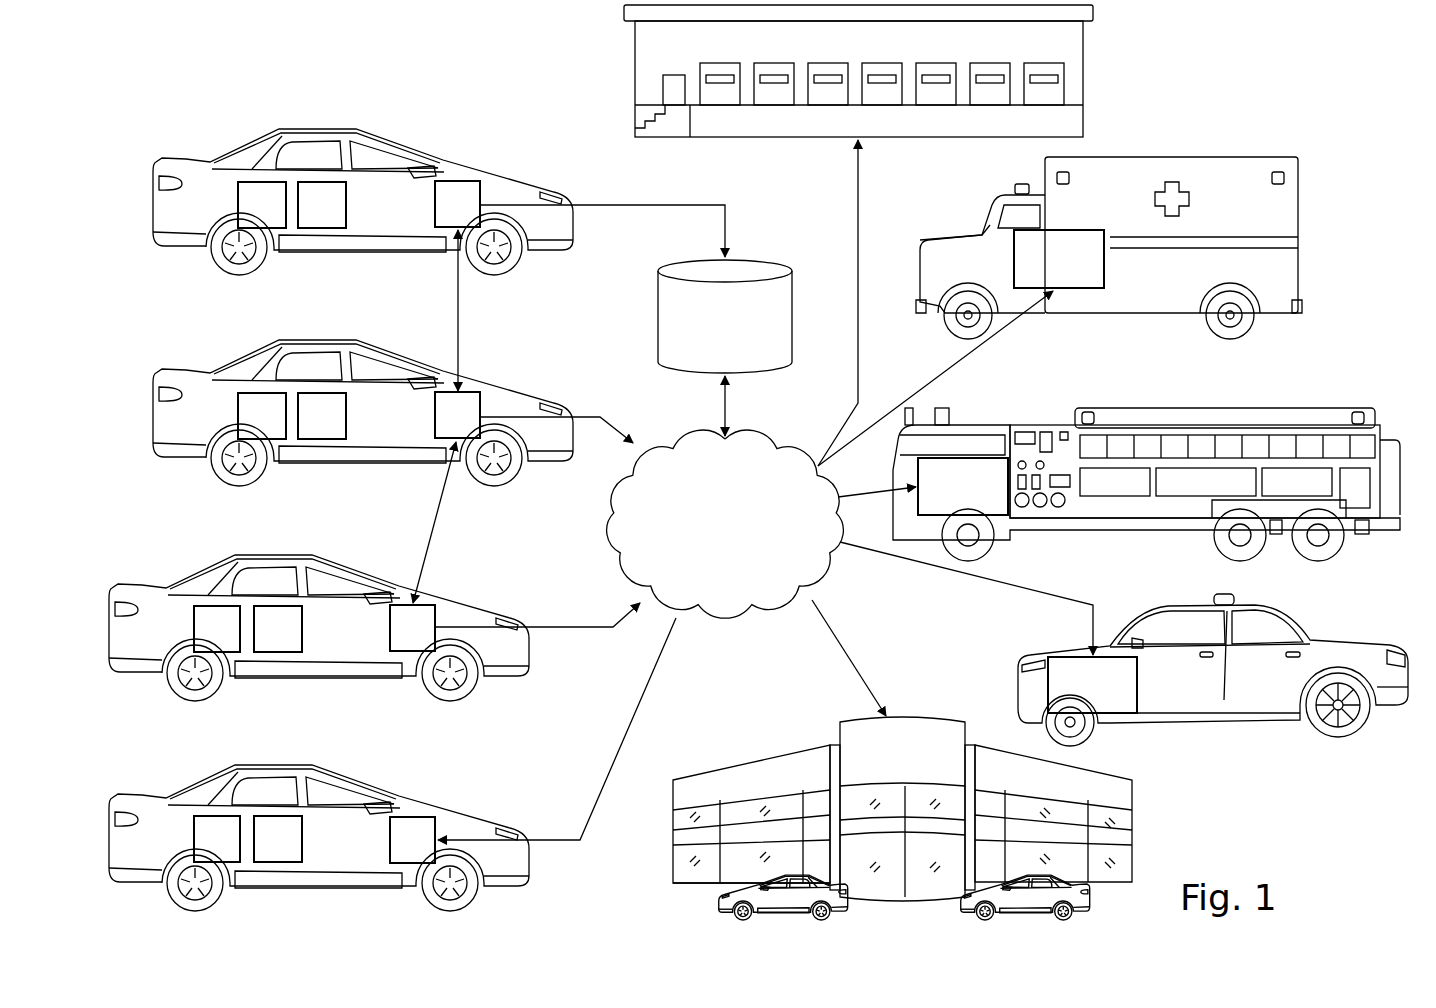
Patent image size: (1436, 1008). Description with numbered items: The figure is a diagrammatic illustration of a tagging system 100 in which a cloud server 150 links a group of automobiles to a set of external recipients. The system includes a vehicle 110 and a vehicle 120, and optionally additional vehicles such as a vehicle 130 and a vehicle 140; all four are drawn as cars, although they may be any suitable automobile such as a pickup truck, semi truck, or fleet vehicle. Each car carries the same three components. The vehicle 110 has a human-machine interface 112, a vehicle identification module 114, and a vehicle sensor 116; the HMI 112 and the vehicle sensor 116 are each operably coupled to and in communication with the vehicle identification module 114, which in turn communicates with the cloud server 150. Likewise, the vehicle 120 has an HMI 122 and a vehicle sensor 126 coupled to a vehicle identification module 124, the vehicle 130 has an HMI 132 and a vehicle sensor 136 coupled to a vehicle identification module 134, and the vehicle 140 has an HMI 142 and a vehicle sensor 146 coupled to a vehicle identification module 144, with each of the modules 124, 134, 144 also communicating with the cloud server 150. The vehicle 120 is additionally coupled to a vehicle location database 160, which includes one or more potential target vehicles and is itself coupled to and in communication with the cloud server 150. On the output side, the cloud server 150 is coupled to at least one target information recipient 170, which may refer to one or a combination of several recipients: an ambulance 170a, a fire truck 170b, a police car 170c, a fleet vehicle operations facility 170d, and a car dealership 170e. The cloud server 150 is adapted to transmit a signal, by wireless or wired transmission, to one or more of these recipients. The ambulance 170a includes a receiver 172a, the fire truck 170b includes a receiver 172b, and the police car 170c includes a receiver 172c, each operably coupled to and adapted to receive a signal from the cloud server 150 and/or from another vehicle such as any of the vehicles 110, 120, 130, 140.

The tagging system 100 is at (404, 74).
The vehicle 110 is at (240, 354).
The human-machine interface 112 is at (238, 417).
The vehicle identification module 114 is at (481, 417).
The vehicle sensor 116 is at (346, 411).
The vehicle 120 is at (240, 143).
The human-machine interface 122 is at (238, 206).
The vehicle identification module 124 is at (481, 206).
The vehicle sensor 126 is at (346, 200).
The vehicle 130 is at (196, 566).
The human-machine interface 132 is at (194, 638).
The vehicle identification module 134 is at (436, 636).
The vehicle sensor 136 is at (302, 632).
The vehicle 140 is at (196, 778).
The human-machine interface 142 is at (194, 848).
The vehicle identification module 144 is at (436, 846).
The vehicle sensor 146 is at (302, 842).
The cloud server 150 is at (702, 536).
The vehicle location database 160 is at (657, 316).
The target information recipient 170 is at (1337, 92).
The ambulance 170a is at (966, 232).
The fire truck 170b is at (1338, 405).
The police car 170c is at (1368, 630).
The fleet vehicle operations facility 170d is at (633, 68).
The car dealership 170e is at (1139, 831).
The receiver 172a is at (1032, 273).
The receiver 172b is at (936, 500).
The receiver 172c is at (1066, 699).